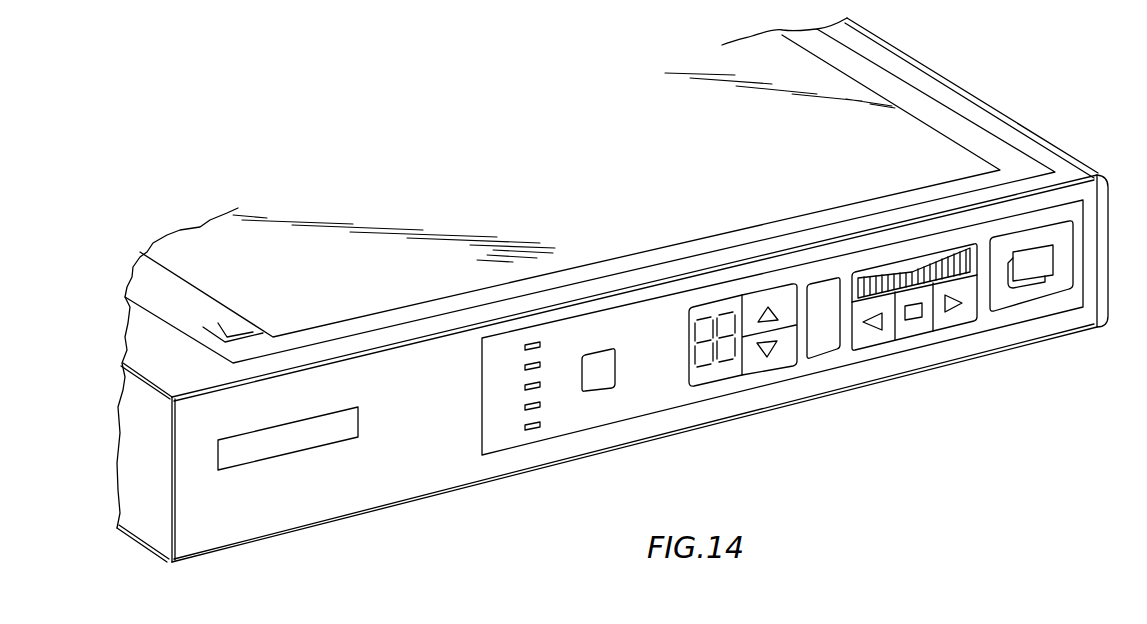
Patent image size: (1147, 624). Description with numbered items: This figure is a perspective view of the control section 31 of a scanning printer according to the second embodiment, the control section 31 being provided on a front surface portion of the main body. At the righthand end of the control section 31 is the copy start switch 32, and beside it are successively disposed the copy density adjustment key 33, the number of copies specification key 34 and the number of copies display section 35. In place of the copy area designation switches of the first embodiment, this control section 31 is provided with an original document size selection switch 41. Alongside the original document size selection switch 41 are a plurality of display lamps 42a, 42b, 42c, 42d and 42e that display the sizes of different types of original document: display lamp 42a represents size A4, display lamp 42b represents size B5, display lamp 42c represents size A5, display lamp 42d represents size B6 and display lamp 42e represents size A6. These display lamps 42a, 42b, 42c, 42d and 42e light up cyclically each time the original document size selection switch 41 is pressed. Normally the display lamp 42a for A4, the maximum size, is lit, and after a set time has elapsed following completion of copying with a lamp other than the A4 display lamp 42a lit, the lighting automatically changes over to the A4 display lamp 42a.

The control section 31 is at (666, 437).
The copy start switch 32 is at (1040, 268).
The copy density adjustment key 33 is at (917, 322).
The number of copies specification key 34 is at (777, 367).
The number of copies display section 35 is at (717, 376).
The original document size selection switch 41 is at (600, 392).
The display lamp 42a is at (525, 347).
The display lamp 42b is at (525, 367).
The display lamp 42c is at (525, 387).
The display lamp 42d is at (525, 407).
The display lamp 42e is at (525, 427).